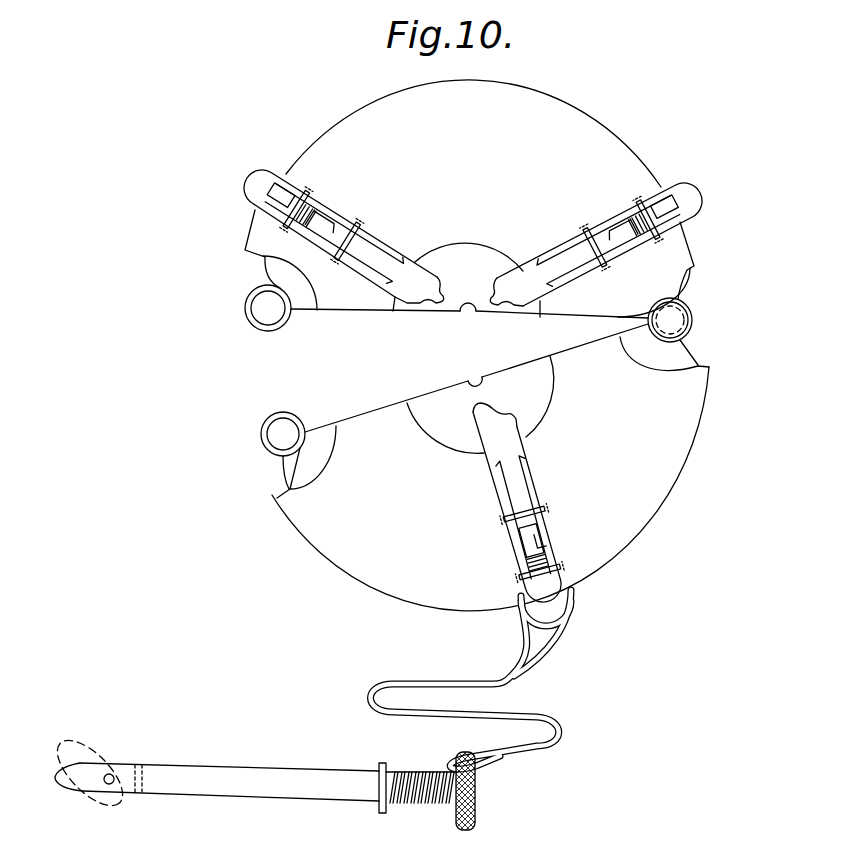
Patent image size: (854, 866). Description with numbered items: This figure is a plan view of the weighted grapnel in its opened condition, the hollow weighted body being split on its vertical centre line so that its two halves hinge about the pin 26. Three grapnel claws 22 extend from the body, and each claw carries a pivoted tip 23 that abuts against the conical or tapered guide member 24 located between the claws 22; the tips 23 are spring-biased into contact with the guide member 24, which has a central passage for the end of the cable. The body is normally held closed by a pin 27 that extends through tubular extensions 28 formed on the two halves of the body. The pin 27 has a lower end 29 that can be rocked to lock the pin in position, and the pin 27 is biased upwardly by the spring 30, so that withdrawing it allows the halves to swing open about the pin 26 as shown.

The grapnel claw 22 is at (343, 215).
The pivoted tip 23 is at (429, 281).
The guide member 24 is at (435, 398).
The pin 26 is at (684, 319).
The pin 27 is at (263, 778).
The tubular extensions 28 is at (251, 303).
The lower end 29 is at (92, 763).
The spring 30 is at (428, 761).